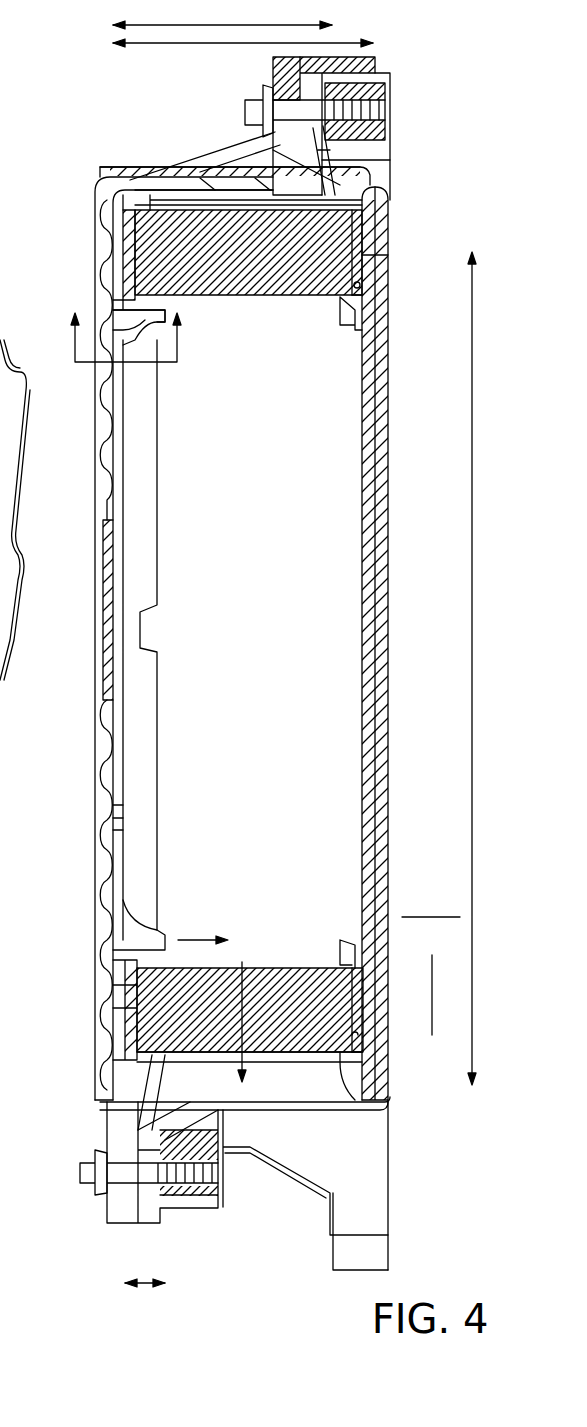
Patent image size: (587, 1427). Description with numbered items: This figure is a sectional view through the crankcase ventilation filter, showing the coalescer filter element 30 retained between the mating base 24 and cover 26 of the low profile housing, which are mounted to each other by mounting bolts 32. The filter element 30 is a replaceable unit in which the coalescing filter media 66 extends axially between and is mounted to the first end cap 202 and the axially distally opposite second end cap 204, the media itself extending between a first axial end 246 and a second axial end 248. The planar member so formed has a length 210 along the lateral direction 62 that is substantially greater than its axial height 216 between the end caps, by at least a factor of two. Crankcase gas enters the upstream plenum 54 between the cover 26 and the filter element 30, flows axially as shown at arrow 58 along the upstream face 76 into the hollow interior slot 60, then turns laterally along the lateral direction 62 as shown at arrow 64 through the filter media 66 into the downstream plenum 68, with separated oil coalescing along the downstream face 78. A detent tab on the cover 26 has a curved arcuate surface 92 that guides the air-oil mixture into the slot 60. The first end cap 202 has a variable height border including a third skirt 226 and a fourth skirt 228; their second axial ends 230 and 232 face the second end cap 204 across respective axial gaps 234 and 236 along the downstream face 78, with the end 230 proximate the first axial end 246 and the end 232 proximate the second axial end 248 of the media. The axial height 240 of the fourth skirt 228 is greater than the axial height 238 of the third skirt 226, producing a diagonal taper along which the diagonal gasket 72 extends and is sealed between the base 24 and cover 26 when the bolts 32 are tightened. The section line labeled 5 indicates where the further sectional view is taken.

The axial height of fourth skirt 240 is at (305, 25).
The axial height 216 is at (355, 43).
The mounting bolts 32 is at (243, 108).
The fourth skirt 228 is at (205, 182).
The second axial end of fourth skirt 232 is at (260, 180).
The diagonal gasket 72 is at (345, 150).
The coalescer filter element 30 is at (118, 197).
The axial gap 236 is at (360, 178).
The first end cap 202 is at (125, 240).
The base 24 is at (378, 217).
The first axial end of filter media 246 is at (128, 268).
The second end cap 204 is at (370, 265).
The second axial end of filter media 248 is at (340, 293).
The section line 5 is at (122, 337).
The length 210 is at (470, 424).
The slot 60 is at (252, 783).
The upstream plenum 54 is at (120, 795).
The curved arcuate surface 92 is at (138, 922).
The arrow 58 is at (200, 938).
The upstream face 76 is at (300, 968).
The filter media 66 is at (350, 1000).
The lateral direction 62 is at (433, 1010).
The third skirt 226 is at (125, 1020).
The cover 26 is at (95, 1060).
The arrow 64 is at (240, 1062).
The downstream plenum 68 is at (293, 1088).
The second axial end of third skirt 230 is at (108, 1140).
The downstream face 78 is at (356, 1103).
The axial gap 234 is at (283, 1165).
The axial height of third skirt 238 is at (243, 687).